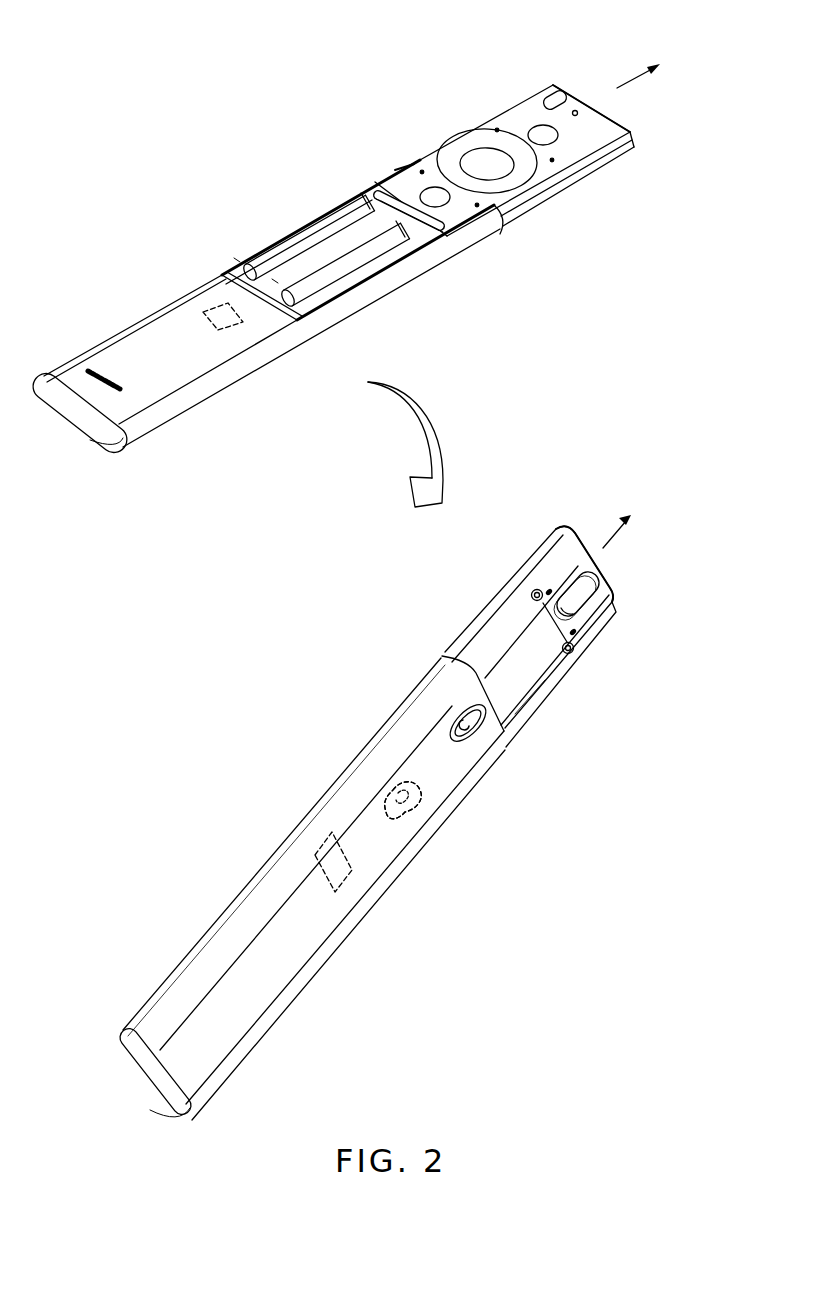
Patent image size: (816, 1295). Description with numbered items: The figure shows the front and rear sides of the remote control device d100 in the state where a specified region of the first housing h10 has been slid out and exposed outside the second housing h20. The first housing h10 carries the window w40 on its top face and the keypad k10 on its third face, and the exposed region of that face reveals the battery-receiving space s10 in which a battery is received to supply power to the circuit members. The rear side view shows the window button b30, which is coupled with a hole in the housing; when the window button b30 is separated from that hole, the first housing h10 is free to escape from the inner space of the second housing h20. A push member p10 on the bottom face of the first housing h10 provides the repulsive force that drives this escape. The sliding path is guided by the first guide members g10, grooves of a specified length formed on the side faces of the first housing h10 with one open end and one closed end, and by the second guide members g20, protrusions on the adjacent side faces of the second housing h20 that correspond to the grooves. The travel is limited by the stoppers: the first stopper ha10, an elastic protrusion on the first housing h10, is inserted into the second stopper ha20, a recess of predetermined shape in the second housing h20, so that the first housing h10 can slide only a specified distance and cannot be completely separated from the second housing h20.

The remote control device d100 is at (287, 55).
The first guide member g10 is at (567, 173).
The second guide member g20 is at (383, 273).
The first housing h10 is at (403, 160).
The second housing h20 is at (270, 347).
The keypad k10 is at (483, 142).
The battery-receiving space s10 is at (278, 289).
The push member p10 is at (203, 311).
The window w40 is at (596, 100).
The window button b30 is at (578, 603).
The second stopper ha20 is at (430, 798).
The first stopper ha10 is at (510, 816).